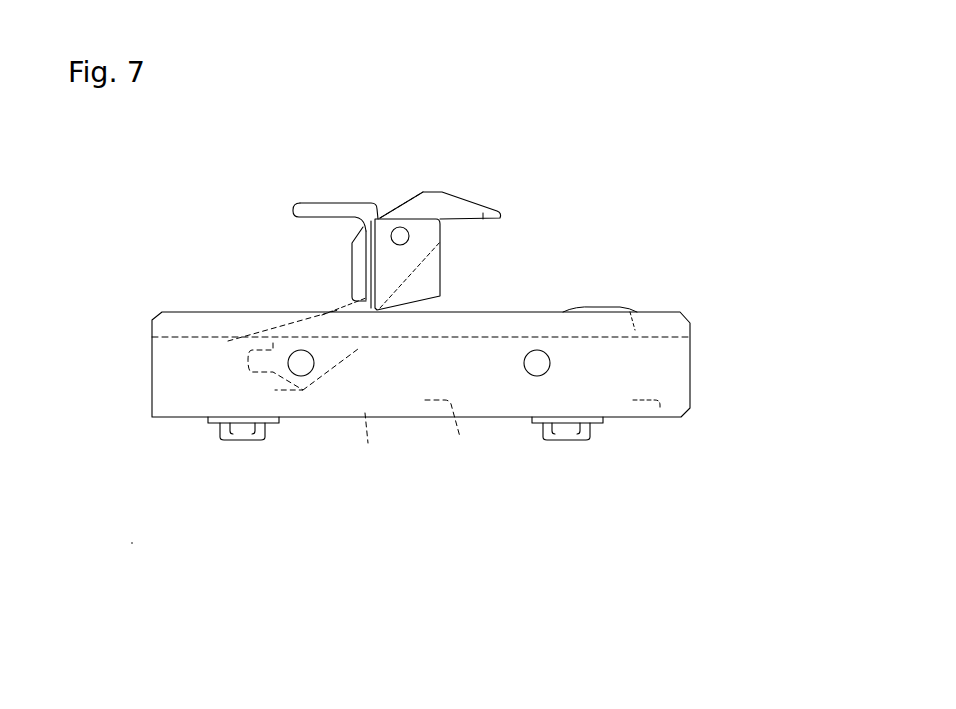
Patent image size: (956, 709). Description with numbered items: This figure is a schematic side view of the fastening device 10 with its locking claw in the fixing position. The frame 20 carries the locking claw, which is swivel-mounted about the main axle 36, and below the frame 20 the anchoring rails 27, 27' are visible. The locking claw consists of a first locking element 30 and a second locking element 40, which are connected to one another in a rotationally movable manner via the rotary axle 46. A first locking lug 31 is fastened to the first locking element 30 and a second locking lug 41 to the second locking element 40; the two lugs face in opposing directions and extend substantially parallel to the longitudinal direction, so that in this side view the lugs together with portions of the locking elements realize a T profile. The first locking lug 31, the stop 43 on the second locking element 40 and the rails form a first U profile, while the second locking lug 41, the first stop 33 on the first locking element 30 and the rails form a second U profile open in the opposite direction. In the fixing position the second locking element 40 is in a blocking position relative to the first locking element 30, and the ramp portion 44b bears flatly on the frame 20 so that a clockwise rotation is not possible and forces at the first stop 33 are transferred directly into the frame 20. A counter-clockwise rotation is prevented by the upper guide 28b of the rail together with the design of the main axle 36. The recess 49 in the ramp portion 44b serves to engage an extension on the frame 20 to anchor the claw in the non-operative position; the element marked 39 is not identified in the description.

The fastening device 10 is at (241, 208).
The frame 20 is at (705, 356).
The anchoring rail 27 is at (233, 509).
The anchoring rail 27' is at (581, 494).
The upper guide 28b is at (360, 352).
The first locking element 30 is at (467, 184).
The first locking lug 31 is at (413, 211).
The first stop 33 is at (338, 272).
The main axle 36 is at (302, 365).
The hidden edge 39 is at (439, 420).
The second locking element 40 is at (333, 197).
The second locking lug 41 is at (365, 214).
The stop 43 is at (464, 268).
The ramp portion 44b is at (384, 299).
The rotary axle 46 is at (401, 238).
The recess 49 is at (354, 300).